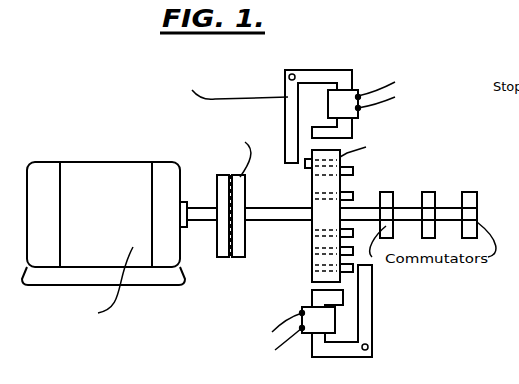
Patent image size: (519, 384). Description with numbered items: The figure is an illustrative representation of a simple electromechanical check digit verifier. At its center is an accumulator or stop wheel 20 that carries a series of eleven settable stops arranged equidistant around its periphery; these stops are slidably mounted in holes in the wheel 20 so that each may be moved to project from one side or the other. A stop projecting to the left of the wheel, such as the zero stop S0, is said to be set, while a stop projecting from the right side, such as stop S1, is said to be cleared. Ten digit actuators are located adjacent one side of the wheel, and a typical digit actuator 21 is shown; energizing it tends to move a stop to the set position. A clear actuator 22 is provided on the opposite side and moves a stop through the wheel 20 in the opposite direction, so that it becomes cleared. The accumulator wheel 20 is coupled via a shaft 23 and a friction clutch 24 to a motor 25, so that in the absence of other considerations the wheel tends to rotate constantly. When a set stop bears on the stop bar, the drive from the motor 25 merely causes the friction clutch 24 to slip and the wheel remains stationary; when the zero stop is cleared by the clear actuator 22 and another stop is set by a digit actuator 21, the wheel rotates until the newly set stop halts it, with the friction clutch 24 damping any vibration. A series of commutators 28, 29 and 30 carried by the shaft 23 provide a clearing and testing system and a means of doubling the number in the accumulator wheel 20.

The accumulator wheel 20 is at (322, 217).
The digit actuator 21 is at (365, 312).
The clear actuator 22 is at (318, 80).
The shaft 23 is at (290, 210).
The friction clutch 24 is at (237, 248).
The motor 25 is at (50, 173).
The commutator 28 is at (386, 202).
The commutator 29 is at (428, 202).
The commutator 30 is at (467, 210).
The zero stop S0 is at (306, 165).
The stop S1 is at (353, 172).